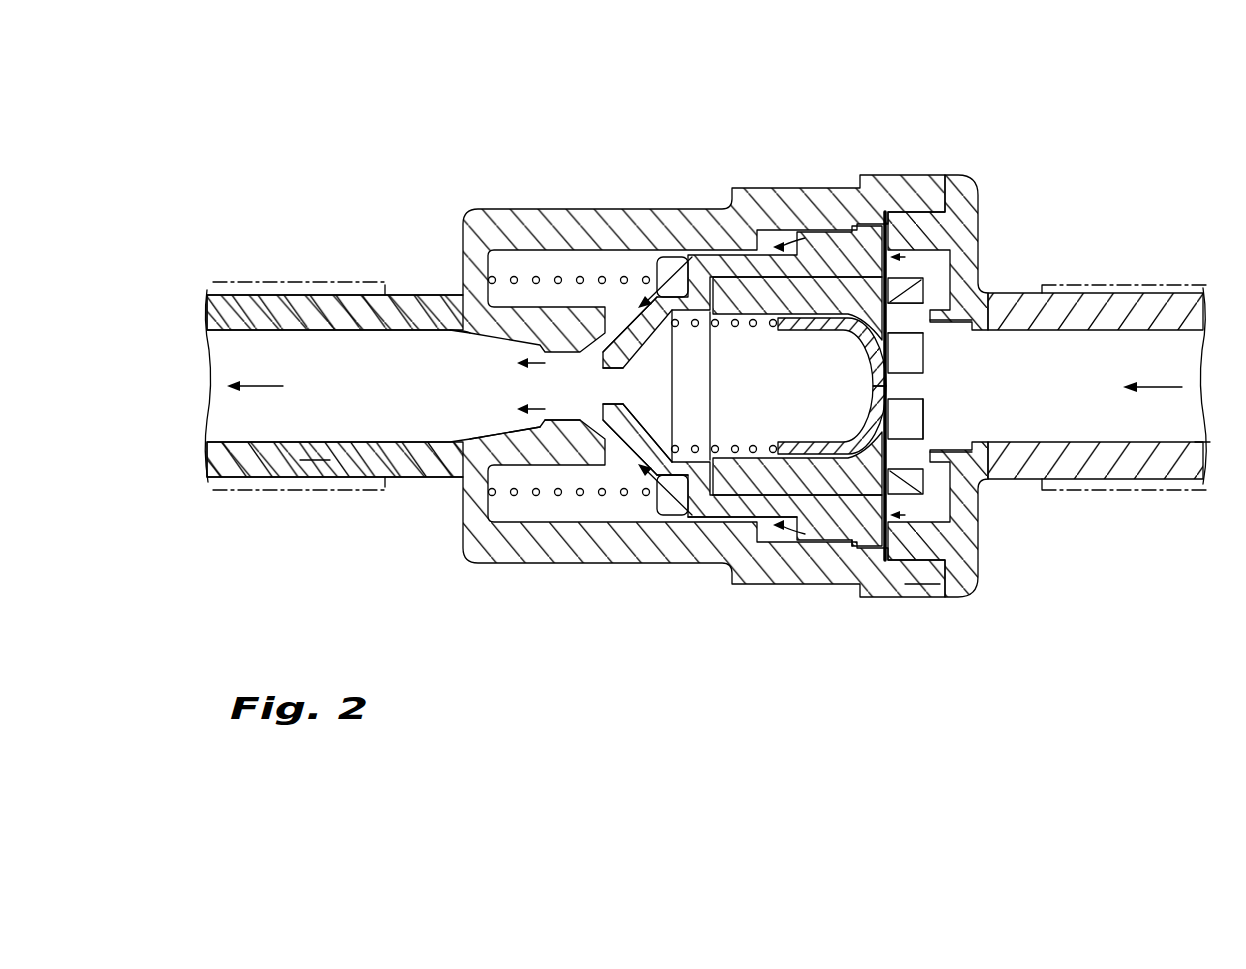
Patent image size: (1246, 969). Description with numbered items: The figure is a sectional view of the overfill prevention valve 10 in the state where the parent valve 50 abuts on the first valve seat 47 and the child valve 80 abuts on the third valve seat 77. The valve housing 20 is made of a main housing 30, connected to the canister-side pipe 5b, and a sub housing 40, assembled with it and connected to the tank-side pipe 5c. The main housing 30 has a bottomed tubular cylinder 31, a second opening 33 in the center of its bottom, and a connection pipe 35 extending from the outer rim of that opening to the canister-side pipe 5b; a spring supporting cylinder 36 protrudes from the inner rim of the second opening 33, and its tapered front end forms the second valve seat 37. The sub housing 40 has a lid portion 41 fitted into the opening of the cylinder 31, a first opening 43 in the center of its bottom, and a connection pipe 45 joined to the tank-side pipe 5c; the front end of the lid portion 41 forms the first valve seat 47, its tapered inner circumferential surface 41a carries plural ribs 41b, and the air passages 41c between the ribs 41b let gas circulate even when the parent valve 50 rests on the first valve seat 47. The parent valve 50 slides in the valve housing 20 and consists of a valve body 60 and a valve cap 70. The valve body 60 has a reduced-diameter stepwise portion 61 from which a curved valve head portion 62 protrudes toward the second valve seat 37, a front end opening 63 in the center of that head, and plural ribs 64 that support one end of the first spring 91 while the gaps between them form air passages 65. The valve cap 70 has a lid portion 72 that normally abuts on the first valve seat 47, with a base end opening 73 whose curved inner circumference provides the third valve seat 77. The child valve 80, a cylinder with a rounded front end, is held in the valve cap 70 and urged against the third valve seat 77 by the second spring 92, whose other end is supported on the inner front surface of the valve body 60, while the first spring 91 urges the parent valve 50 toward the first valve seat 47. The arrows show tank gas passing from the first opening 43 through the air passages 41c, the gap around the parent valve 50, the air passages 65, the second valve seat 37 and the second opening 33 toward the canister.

The overfill prevention valve 10 is at (670, 150).
The valve housing 20 is at (955, 82).
The main housing 30 is at (772, 176).
The cylinder 31 is at (537, 210).
The second opening 33 is at (455, 347).
The connection pipe 35 is at (308, 460).
The spring supporting cylinder 36 is at (503, 563).
The second valve seat 37 is at (545, 564).
The sub housing 40 is at (956, 166).
The lid portion 41 is at (917, 230).
The inner circumferential surface 41a is at (905, 450).
The ribs 41b is at (903, 322).
The air passages 41c is at (912, 287).
The first opening 43 is at (960, 333).
The connection pipe 45 is at (1205, 470).
The first valve seat 47 is at (920, 598).
The parent valve 50 is at (687, 668).
The valve body 60 is at (722, 524).
The stepwise portion 61 is at (632, 318).
The valve head portion 62 is at (617, 564).
The front end opening 63 is at (585, 564).
The ribs 64 is at (645, 564).
The air passages 65 is at (683, 564).
The valve cap 70 is at (788, 504).
The lid portion 72 is at (897, 584).
The base end opening 73 is at (915, 427).
The third valve seat 77 is at (853, 584).
The child valve 80 is at (817, 322).
The first spring 91 is at (585, 275).
The second spring 92 is at (735, 320).
The canister-side pipe 5b is at (298, 282).
The tank-side pipe 5c is at (1196, 285).